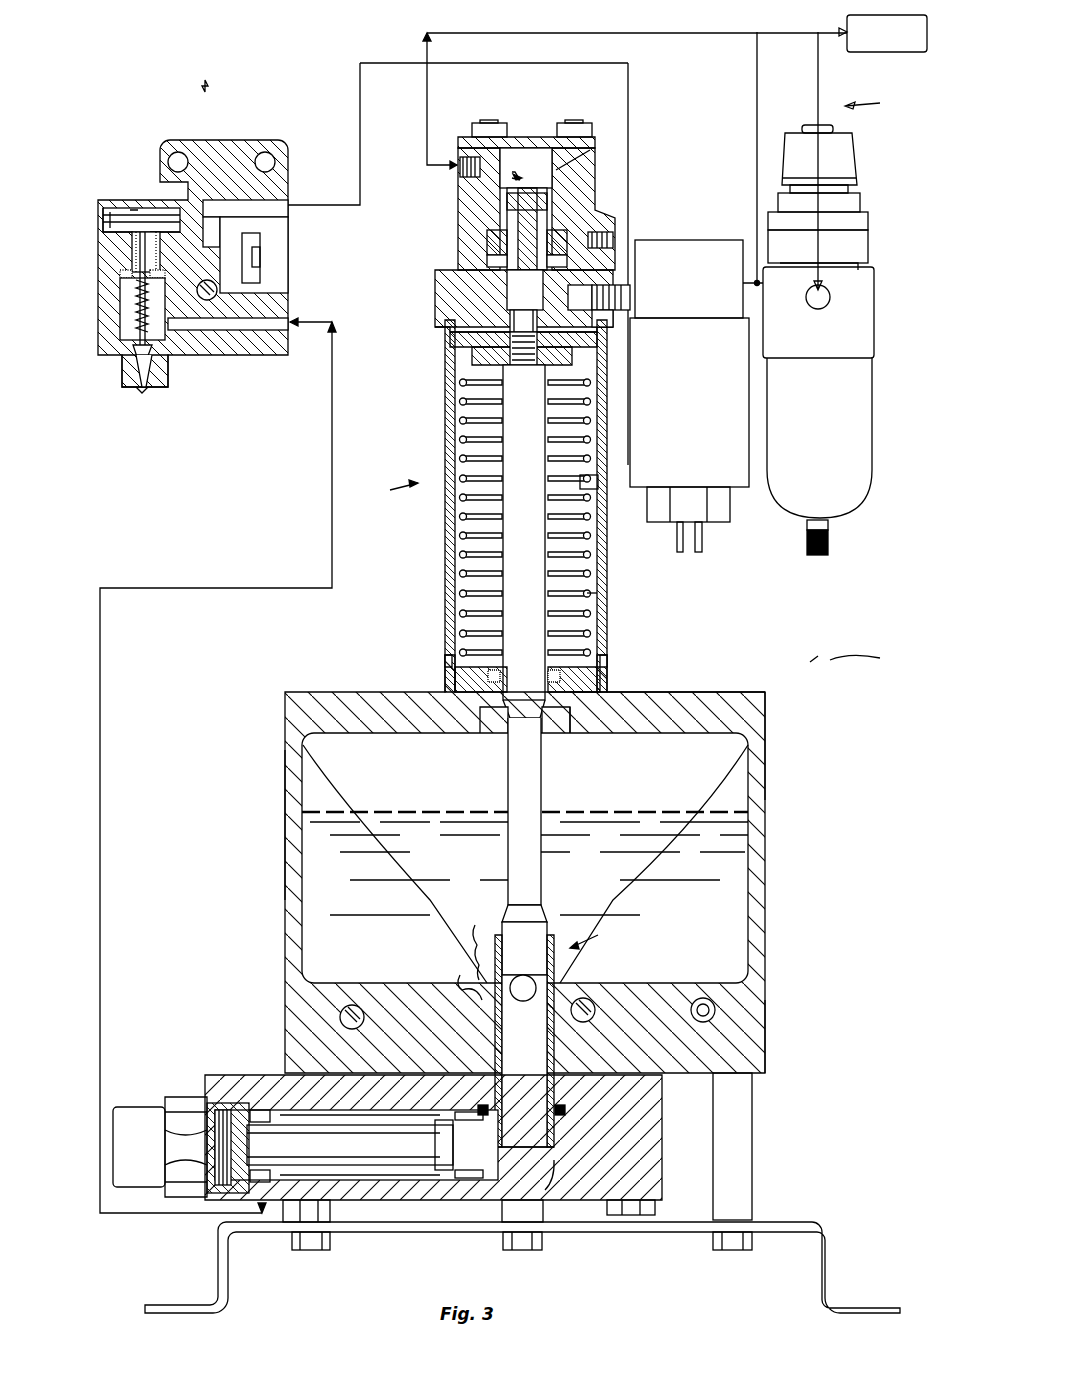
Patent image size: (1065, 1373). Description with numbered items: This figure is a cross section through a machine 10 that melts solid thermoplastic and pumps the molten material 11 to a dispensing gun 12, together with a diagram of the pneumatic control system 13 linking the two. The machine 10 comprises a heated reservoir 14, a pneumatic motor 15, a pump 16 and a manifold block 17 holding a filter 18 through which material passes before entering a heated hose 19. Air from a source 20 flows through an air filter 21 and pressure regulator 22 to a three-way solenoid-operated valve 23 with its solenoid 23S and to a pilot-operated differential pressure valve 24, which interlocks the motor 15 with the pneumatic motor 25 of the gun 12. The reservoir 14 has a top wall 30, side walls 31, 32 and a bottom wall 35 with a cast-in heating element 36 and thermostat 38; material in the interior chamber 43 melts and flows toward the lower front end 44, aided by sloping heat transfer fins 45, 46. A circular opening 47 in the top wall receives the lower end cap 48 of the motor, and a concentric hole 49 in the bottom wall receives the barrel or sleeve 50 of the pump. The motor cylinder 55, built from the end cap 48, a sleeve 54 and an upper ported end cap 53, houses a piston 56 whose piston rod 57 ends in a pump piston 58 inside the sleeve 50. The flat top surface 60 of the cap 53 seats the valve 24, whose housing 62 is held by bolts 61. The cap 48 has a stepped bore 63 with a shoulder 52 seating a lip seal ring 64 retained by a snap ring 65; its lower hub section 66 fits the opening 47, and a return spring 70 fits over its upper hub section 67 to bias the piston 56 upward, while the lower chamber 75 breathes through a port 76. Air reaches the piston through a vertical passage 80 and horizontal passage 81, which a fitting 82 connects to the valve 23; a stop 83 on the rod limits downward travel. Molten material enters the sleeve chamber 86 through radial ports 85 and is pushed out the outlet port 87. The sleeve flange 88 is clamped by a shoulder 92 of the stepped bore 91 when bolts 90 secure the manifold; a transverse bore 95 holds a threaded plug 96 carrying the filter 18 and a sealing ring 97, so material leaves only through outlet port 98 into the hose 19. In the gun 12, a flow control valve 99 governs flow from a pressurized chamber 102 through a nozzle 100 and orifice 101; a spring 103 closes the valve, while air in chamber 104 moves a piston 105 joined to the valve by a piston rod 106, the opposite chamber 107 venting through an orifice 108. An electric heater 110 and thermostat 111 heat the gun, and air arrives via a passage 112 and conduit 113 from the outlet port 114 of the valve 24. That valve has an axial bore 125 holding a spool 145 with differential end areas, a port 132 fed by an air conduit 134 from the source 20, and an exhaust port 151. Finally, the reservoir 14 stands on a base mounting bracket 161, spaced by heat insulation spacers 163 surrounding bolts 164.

The machine 10 is at (849, 662).
The molten material 11 is at (525, 863).
The dispensing gun 12 is at (211, 75).
The pneumatic control system 13 is at (876, 104).
The heated reservoir 14 is at (765, 850).
The pneumatic motor 15 is at (390, 490).
The pump 16 is at (606, 935).
The manifold block 17 is at (640, 1140).
The filter 18 is at (405, 1165).
The hose 19 is at (332, 410).
The source of air pressure 20 is at (885, 52).
The air filter 21 is at (818, 411).
The pressure regulator 22 is at (860, 247).
The three-way solenoid-operated valve 23 is at (689, 279).
The electrical solenoid 23S is at (689, 435).
The pilot-operated differential pressure valve 24 is at (620, 148).
The pneumatic motor of the dispensing gun 25 is at (120, 245).
The top wall 30 is at (690, 700).
The side wall 31 is at (765, 812).
The side wall 32 is at (290, 835).
The bottom wall 35 is at (740, 1050).
The heating element 36 is at (355, 1005).
The electrical thermostat 38 is at (703, 998).
The interior chamber 43 is at (525, 858).
The lower front end 44 is at (473, 943).
The heat transfer fin 45 is at (730, 772).
The heat transfer fin 46 is at (345, 795).
The circular opening 47 is at (492, 737).
The lower end cap 48 is at (605, 690).
The hole 49 is at (457, 978).
The barrel 50 is at (555, 935).
The shoulder 52 is at (572, 720).
The upper ported end cap 53 is at (435, 298).
The sleeve 54 is at (445, 500).
The motor cylinder 55 is at (445, 535).
The piston 56 is at (455, 345).
The piston rod 57 is at (528, 532).
The piston 58 is at (530, 935).
The flat top surface 60 is at (435, 270).
The bolts 61 is at (492, 122).
The housing 62 is at (580, 190).
The stepped axial bore 63 is at (554, 737).
The annular lip seal 64 is at (550, 690).
The snap ring 65 is at (575, 672).
The hub section 66 is at (494, 700).
The hub section 67 is at (470, 668).
The compression spring 70 is at (588, 578).
The lower chamber 75 is at (470, 430).
The port 76 is at (445, 665).
The vertical passage 80 is at (610, 318).
The horizontal passage 81 is at (580, 292).
The pipe threaded fitting 82 is at (645, 330).
The stop 83 is at (598, 478).
The radial ports 85 is at (530, 1000).
The interior chamber 86 is at (530, 1061).
The outlet port 87 is at (515, 1150).
The lower flange 88 is at (483, 1105).
The bolts 90 is at (285, 1210).
The stepped bore 91 is at (462, 1112).
The shoulder 92 is at (575, 1110).
The transverse bore 95 is at (360, 1110).
The threaded plug 96 is at (185, 1108).
The sealing ring 97 is at (262, 1108).
The outlet port 98 is at (220, 1200).
The flow control valve 99 is at (138, 355).
The nozzle 100 is at (170, 376).
The outlet orifice 101 is at (130, 390).
The pressurized chamber 102 is at (122, 330).
The spring 103 is at (136, 305).
The pressure chamber 104 is at (118, 231).
The piston 105 is at (108, 212).
The piston rod 106 is at (140, 258).
The chamber 107 is at (125, 205).
The orifice 108 is at (142, 210).
The electric heater 110 is at (212, 297).
The thermostat 111 is at (262, 260).
The passage 112 is at (265, 205).
The conduit 113 is at (362, 133).
The outlet port 114 is at (612, 243).
The axial bore 125 is at (585, 122).
The port 132 is at (463, 172).
The air conduit 134 is at (428, 95).
The spool 145 is at (560, 215).
The exhaust port 151 is at (472, 222).
The base mounting bracket 161 is at (832, 1255).
The heat insulation spacers 163 is at (752, 1183).
The bolts 164 is at (311, 1253).